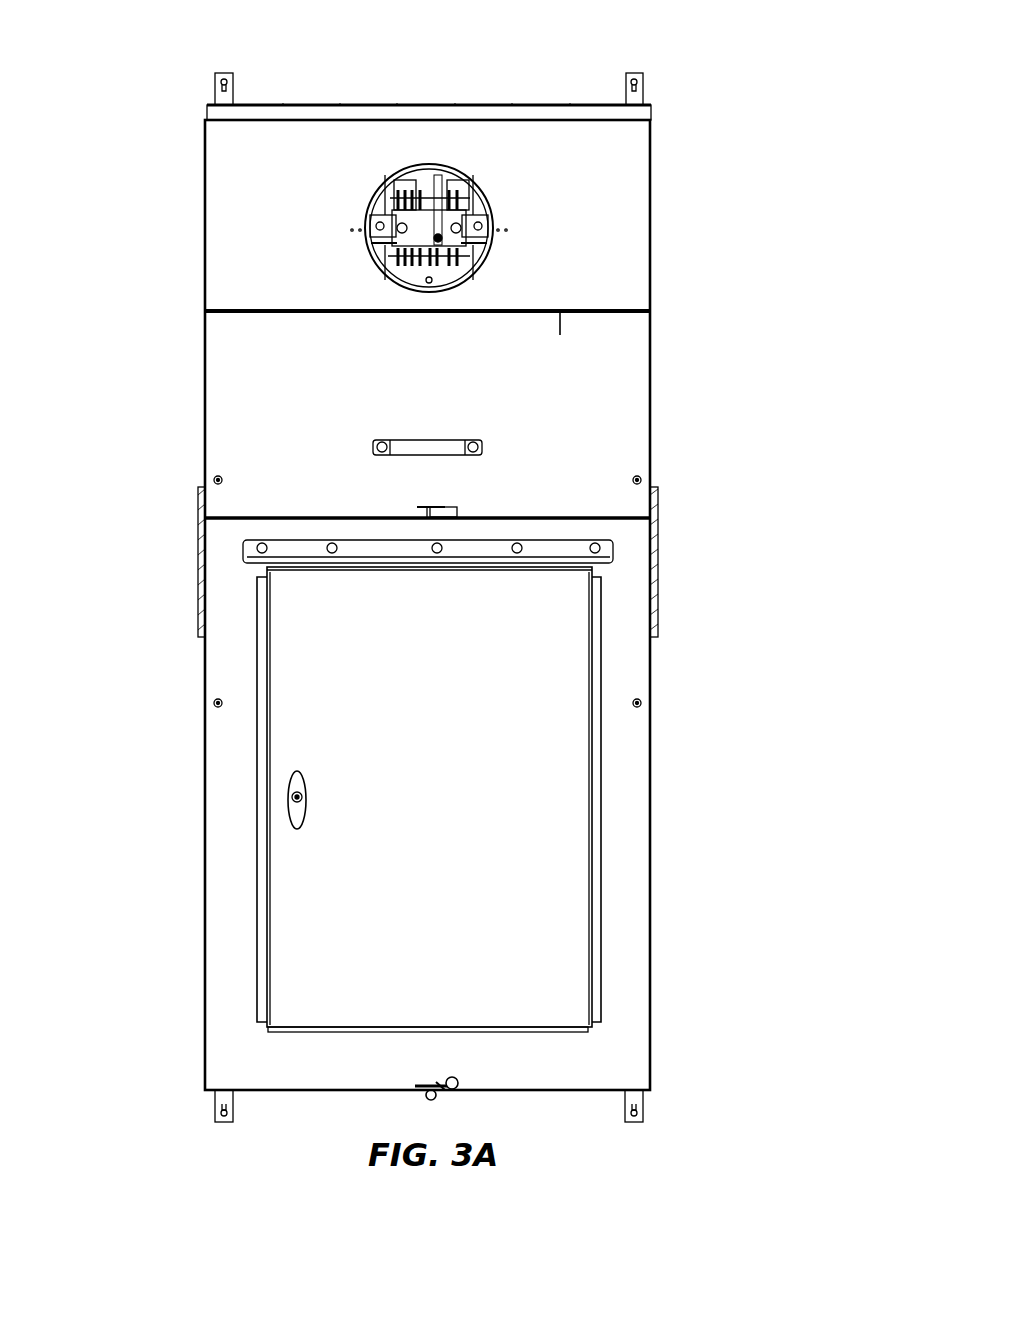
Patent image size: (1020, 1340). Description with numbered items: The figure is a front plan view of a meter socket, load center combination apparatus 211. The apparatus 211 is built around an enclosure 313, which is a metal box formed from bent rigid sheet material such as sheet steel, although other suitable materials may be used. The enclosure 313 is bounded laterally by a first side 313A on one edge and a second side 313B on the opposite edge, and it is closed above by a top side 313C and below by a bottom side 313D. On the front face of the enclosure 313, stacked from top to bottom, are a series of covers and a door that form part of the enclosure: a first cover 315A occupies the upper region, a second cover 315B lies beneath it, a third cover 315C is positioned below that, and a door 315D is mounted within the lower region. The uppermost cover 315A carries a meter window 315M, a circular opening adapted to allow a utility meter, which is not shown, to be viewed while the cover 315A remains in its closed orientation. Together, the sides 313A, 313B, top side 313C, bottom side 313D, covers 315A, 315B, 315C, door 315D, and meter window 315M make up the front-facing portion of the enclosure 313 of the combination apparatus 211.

The meter socket, load center combination apparatus 211 is at (533, 98).
The enclosure 313 is at (203, 290).
The first side 313A is at (205, 757).
The second side 313B is at (650, 757).
The top side 313C is at (427, 103).
The bottom side 313D is at (557, 1085).
The cover 315A is at (608, 200).
The cover 315B is at (593, 374).
The cover 315C is at (623, 923).
The door 315D is at (310, 908).
The meter window 315M is at (368, 200).